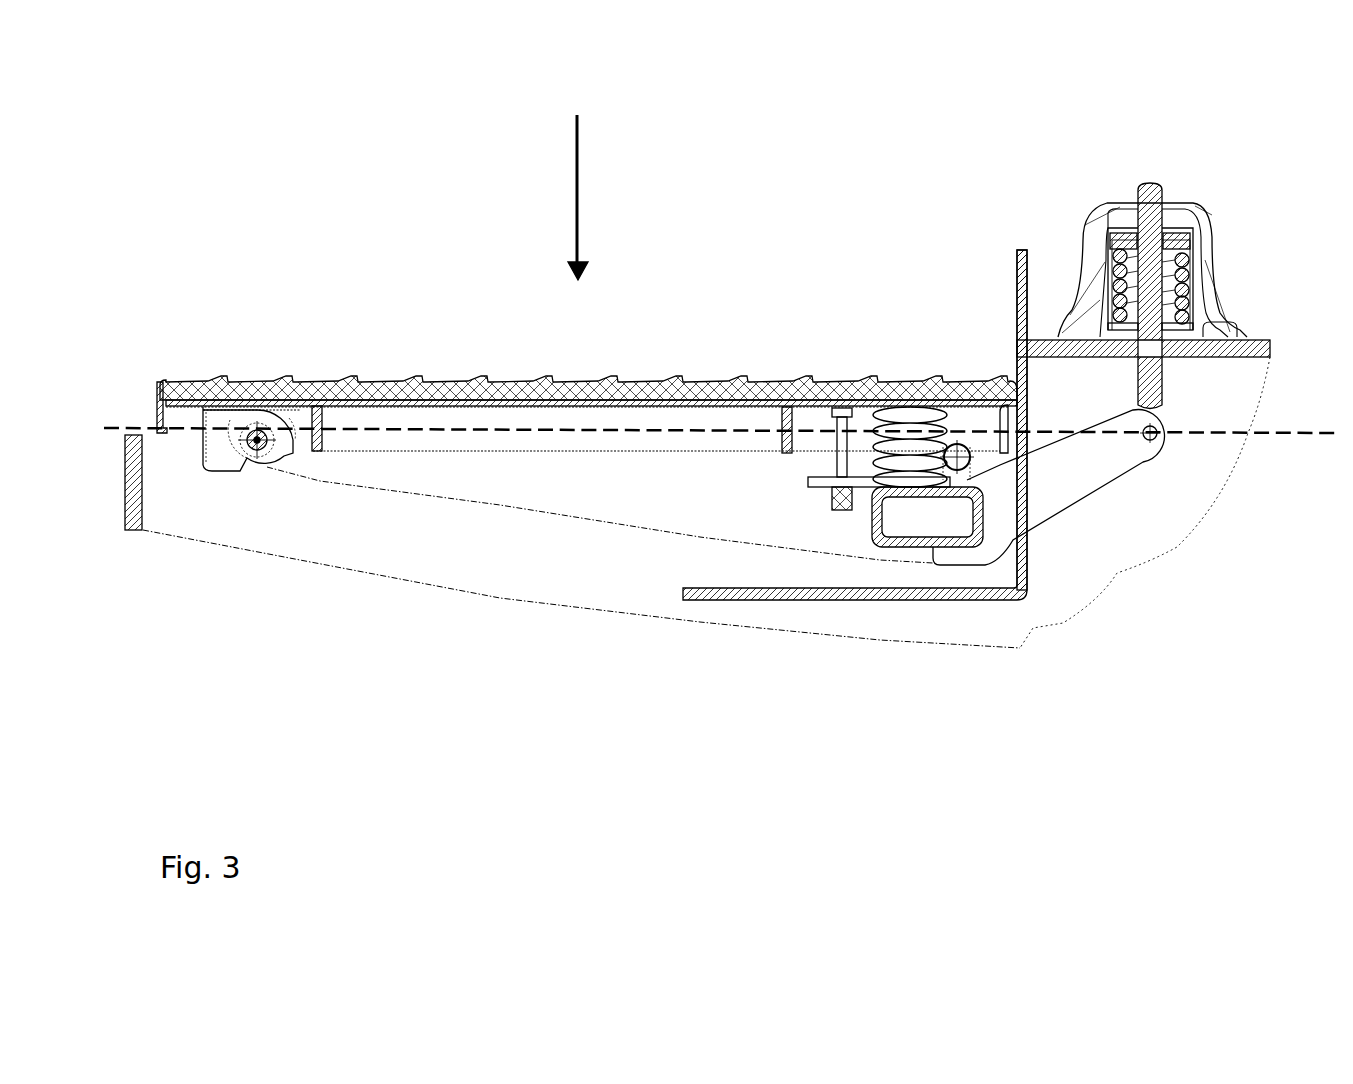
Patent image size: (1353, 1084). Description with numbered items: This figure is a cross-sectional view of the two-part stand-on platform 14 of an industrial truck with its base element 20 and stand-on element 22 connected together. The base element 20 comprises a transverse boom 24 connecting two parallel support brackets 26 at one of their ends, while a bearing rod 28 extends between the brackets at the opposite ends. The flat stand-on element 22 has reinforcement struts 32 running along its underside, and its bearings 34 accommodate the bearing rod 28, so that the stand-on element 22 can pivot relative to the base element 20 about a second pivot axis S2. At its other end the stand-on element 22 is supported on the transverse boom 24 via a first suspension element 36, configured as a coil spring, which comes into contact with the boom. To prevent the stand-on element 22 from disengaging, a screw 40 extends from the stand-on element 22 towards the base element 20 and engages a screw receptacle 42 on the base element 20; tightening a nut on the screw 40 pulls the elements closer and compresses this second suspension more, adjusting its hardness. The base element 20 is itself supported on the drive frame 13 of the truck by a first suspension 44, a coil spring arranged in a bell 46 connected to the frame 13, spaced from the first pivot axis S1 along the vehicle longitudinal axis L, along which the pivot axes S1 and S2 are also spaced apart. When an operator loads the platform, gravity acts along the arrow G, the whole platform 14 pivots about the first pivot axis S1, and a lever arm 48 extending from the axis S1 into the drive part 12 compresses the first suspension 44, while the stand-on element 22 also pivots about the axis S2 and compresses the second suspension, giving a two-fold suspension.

The drive part 12 is at (1025, 285).
The drive frame 13 is at (133, 495).
The stand-on platform 14 is at (241, 265).
The base element 20 is at (695, 527).
The stand-on element 22 is at (422, 378).
The transverse boom 24 is at (917, 540).
The support brackets 26 is at (582, 502).
The bearing rod 28 is at (252, 434).
The reinforcement struts 32 is at (520, 423).
The bearings 34 is at (270, 428).
The first suspension element 36 is at (927, 433).
The screw 40 is at (840, 462).
The screw receptacle 42 is at (840, 508).
The first suspension 44 is at (1180, 287).
The bell 46 is at (1118, 220).
The lever arm 48 is at (1067, 487).
The first pivot axis S1 is at (962, 452).
The second pivot axis S2 is at (257, 447).
The gravitational force arrow G is at (589, 197).
The vehicle longitudinal axis L is at (701, 445).